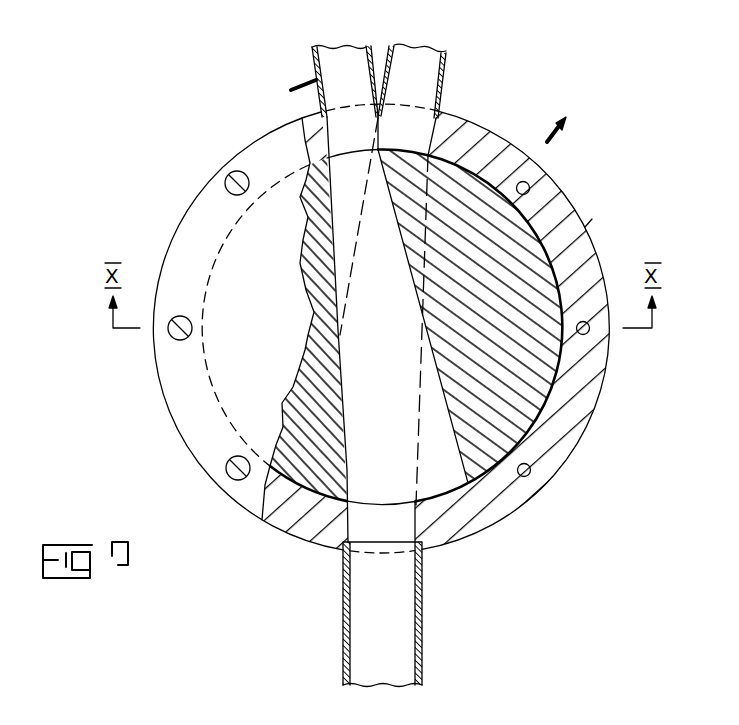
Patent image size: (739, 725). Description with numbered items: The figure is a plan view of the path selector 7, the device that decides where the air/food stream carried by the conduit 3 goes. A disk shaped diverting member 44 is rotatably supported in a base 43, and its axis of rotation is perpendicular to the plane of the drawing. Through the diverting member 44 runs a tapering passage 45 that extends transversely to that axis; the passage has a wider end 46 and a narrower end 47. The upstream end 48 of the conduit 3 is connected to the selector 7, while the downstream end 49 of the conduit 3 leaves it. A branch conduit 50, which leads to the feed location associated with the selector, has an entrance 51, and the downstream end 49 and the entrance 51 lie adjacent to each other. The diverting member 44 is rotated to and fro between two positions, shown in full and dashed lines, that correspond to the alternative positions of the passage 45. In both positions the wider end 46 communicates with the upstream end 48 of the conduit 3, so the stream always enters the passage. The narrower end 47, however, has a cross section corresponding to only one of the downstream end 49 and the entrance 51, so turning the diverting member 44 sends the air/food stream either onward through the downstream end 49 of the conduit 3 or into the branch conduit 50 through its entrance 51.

The conduit 3 is at (430, 636).
The path selector 7 is at (572, 114).
The base 43 is at (567, 417).
The diverting member 44 is at (553, 256).
The tapering passage 45 is at (340, 335).
The wider end 46 is at (403, 498).
The narrower end 47 is at (350, 156).
The upstream end 48 is at (378, 511).
The downstream end 49 is at (348, 145).
The branch conduit 50 is at (447, 68).
The entrance 51 is at (407, 143).